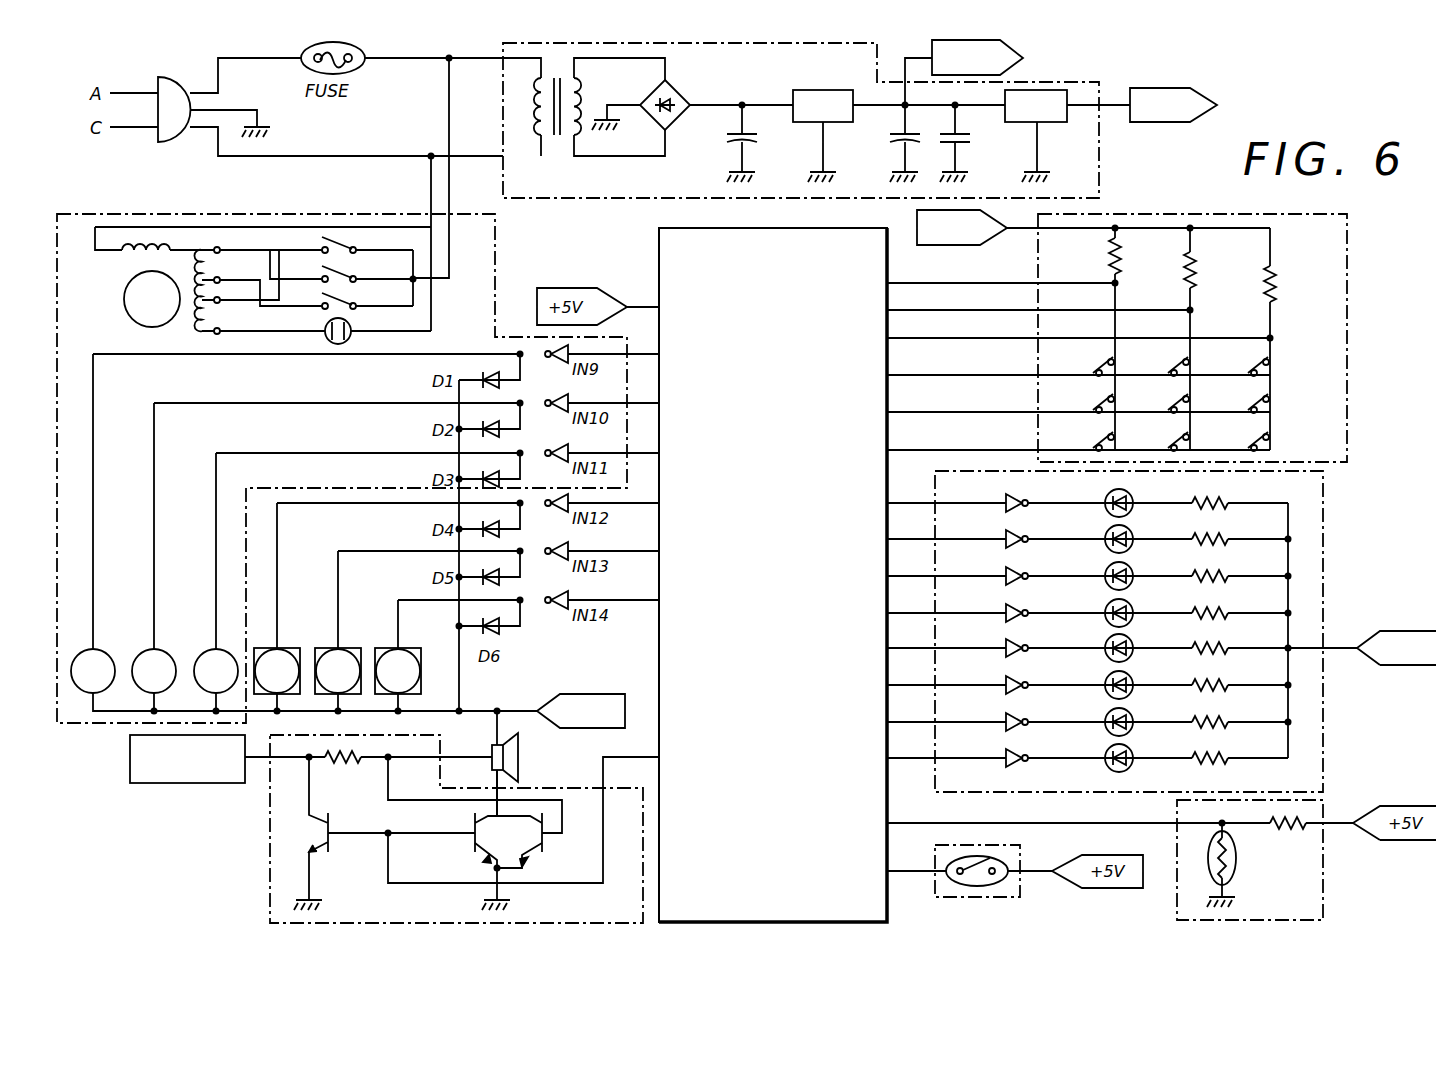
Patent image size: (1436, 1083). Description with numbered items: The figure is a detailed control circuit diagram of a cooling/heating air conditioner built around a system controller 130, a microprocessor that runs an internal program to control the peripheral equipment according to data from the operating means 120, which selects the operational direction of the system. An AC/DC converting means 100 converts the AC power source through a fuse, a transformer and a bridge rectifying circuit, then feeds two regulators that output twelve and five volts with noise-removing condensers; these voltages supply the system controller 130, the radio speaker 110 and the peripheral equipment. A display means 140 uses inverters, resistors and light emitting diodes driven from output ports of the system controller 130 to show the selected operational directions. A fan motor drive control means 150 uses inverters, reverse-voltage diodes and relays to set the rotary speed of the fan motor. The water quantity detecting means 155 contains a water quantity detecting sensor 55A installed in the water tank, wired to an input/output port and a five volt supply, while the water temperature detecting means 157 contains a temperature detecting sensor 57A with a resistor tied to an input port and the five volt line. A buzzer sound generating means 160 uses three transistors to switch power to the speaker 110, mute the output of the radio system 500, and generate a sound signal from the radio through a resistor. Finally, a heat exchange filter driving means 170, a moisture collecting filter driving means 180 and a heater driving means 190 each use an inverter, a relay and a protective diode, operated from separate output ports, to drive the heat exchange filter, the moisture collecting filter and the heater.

The AC/DC converting means 100 is at (1099, 166).
The speaker 110 is at (520, 757).
The operating means 120 is at (1347, 372).
The system controller 130 is at (659, 252).
The display means 140 is at (1323, 525).
The fan motor drive control means 150 is at (130, 212).
The water quantity detecting means 155 is at (960, 897).
The water temperature detecting means 157 is at (1325, 893).
The buzzer sound generating means 160 is at (268, 897).
The heat exchange filter driving means 170 is at (286, 648).
The moisture collecting filter driving means 180 is at (347, 648).
The heater driving means 190 is at (408, 648).
The radio system 500 is at (186, 787).
The water quantity detecting sensor 55A is at (1000, 883).
The temperature detecting sensor 57A is at (1237, 858).